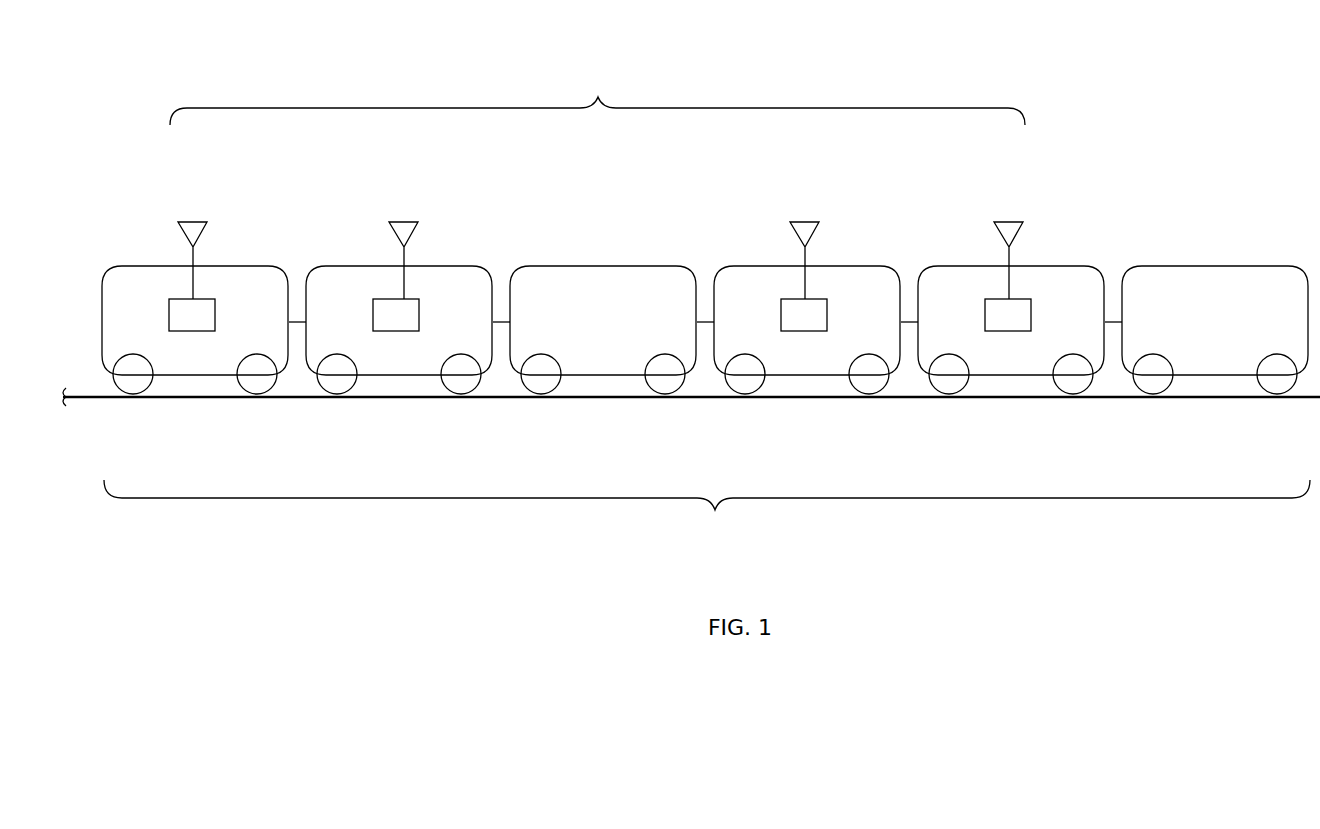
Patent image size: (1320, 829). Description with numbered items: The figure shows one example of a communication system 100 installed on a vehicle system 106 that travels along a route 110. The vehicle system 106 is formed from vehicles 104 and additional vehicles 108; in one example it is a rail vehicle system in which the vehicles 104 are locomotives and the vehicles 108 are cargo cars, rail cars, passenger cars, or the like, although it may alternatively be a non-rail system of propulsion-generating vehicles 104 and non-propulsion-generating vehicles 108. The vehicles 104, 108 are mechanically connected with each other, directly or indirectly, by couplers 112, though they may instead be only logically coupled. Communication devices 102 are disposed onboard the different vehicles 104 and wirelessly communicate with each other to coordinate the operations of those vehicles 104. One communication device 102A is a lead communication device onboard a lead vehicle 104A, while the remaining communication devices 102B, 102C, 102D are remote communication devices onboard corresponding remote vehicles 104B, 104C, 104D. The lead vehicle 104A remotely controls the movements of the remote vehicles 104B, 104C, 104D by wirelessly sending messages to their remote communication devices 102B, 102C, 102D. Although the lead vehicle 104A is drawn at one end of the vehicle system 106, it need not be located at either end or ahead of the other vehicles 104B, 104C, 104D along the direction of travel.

The communication system 100 is at (598, 97).
The communication devices 102 is at (160, 296).
The lead communication device 102A is at (193, 332).
The remote communication device 102B is at (397, 332).
The remote communication device 102C is at (805, 332).
The remote communication device 102D is at (1009, 332).
The vehicles 104 is at (88, 332).
The lead vehicle 104A is at (250, 266).
The remote vehicle 104B is at (454, 266).
The remote vehicle 104C is at (865, 266).
The remote vehicle 104D is at (1070, 266).
The vehicle system 106 is at (715, 510).
The additional vehicles 108 is at (600, 266).
The route 110 is at (1220, 398).
The couplers 112 is at (193, 222).